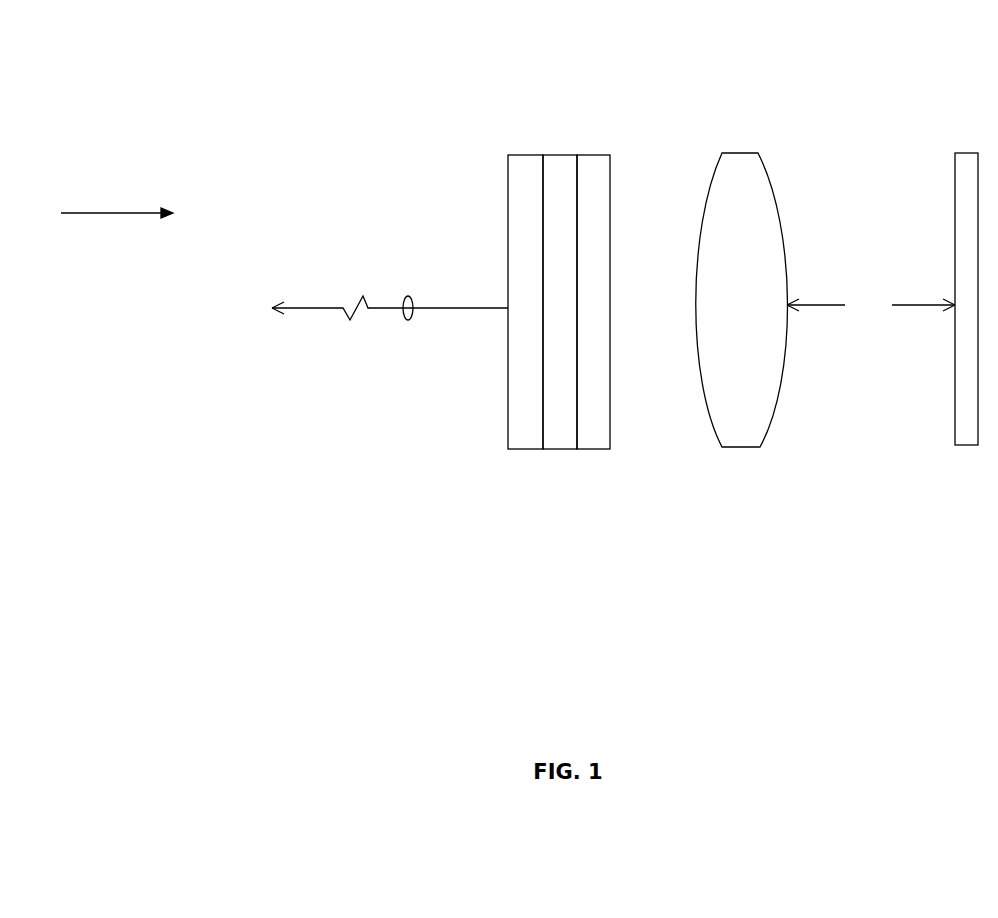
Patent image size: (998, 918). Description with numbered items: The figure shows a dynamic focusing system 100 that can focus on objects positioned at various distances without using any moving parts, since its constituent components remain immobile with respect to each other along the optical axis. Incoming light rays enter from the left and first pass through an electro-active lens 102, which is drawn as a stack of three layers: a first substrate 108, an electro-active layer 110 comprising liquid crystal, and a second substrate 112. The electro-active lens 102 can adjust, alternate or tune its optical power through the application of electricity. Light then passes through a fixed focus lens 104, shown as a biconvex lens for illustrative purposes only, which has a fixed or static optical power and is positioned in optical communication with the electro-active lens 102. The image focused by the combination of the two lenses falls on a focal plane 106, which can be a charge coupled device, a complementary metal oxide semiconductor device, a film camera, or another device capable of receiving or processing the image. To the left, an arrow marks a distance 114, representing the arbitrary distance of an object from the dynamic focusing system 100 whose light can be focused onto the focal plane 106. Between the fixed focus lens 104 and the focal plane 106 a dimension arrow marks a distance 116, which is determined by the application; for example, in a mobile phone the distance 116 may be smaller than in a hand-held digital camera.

The dynamic focusing system 100 is at (209, 76).
The electro-active lens 102 is at (560, 342).
The fixed focus lens 104 is at (742, 449).
The focal plane 106 is at (965, 447).
The first substrate 108 is at (521, 155).
The electro-active layer 110 is at (558, 449).
The second substrate 112 is at (594, 155).
The distance 114 is at (407, 320).
The distance 116 is at (871, 306).